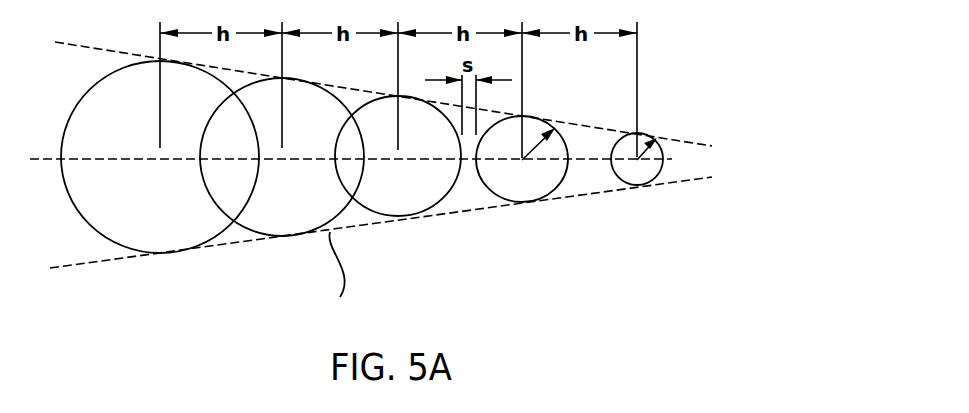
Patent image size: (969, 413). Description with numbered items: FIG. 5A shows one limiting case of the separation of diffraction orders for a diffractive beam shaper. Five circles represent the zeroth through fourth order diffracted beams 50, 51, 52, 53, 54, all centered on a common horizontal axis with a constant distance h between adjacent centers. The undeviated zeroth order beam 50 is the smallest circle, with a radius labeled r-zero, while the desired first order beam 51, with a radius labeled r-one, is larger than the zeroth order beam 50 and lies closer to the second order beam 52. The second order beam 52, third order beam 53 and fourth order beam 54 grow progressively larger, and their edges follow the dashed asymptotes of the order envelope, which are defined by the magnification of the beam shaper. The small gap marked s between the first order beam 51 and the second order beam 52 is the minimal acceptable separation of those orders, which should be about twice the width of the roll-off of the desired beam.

The 0th order diffracted beam 50 is at (684, 195).
The 1st order diffracted beam 51 is at (470, 192).
The 2nd order diffracted beam 52 is at (372, 218).
The 3rd order diffracted beam 53 is at (240, 229).
The 4th order diffracted beam 54 is at (95, 229).